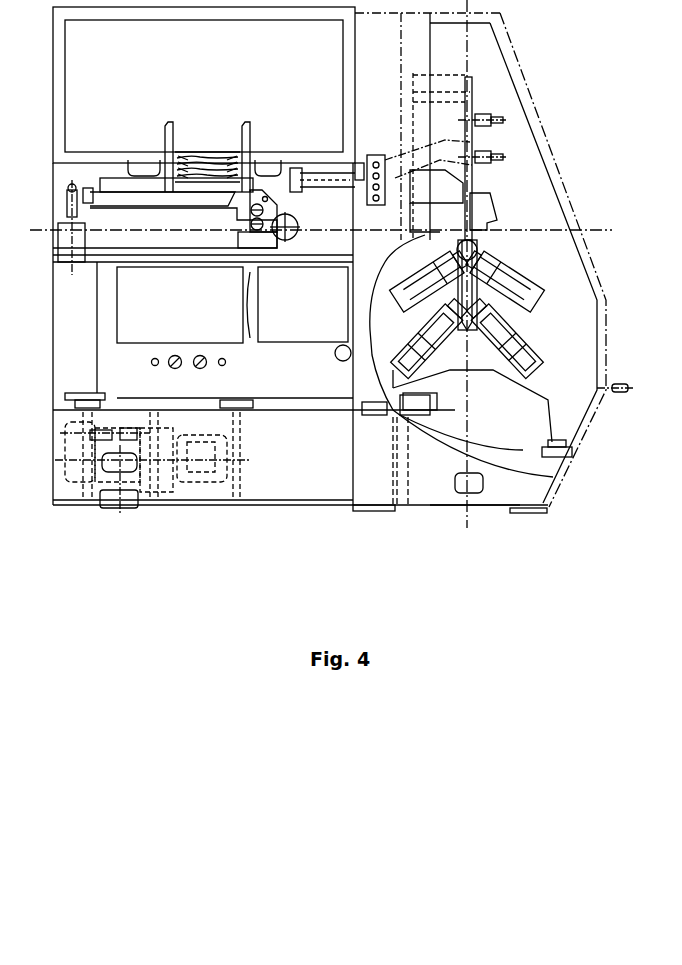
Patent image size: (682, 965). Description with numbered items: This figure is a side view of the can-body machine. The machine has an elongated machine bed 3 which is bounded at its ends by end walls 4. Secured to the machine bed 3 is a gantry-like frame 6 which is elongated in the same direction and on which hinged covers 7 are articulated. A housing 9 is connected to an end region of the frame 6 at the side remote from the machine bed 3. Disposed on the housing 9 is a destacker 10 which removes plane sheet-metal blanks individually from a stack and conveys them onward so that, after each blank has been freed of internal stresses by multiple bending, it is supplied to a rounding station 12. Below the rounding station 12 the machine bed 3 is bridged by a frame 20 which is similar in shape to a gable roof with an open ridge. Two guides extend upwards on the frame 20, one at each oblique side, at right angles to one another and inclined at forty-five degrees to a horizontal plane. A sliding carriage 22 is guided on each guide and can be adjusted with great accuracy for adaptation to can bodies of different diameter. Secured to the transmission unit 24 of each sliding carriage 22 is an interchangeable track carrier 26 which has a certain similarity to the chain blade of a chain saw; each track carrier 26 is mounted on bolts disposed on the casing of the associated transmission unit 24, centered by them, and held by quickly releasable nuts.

The machine bed 3 is at (548, 496).
The end walls 4 is at (431, 467).
The gantry-like frame 6 is at (370, 480).
The hinged covers 7 is at (506, 35).
The housing 9 is at (298, 470).
The destacker 10 is at (211, 140).
The rounding station 12 is at (506, 220).
The frame 20 is at (507, 375).
The sliding carriage 22 is at (517, 357).
The transmission unit 24 is at (507, 323).
The track carrier 26 is at (511, 268).